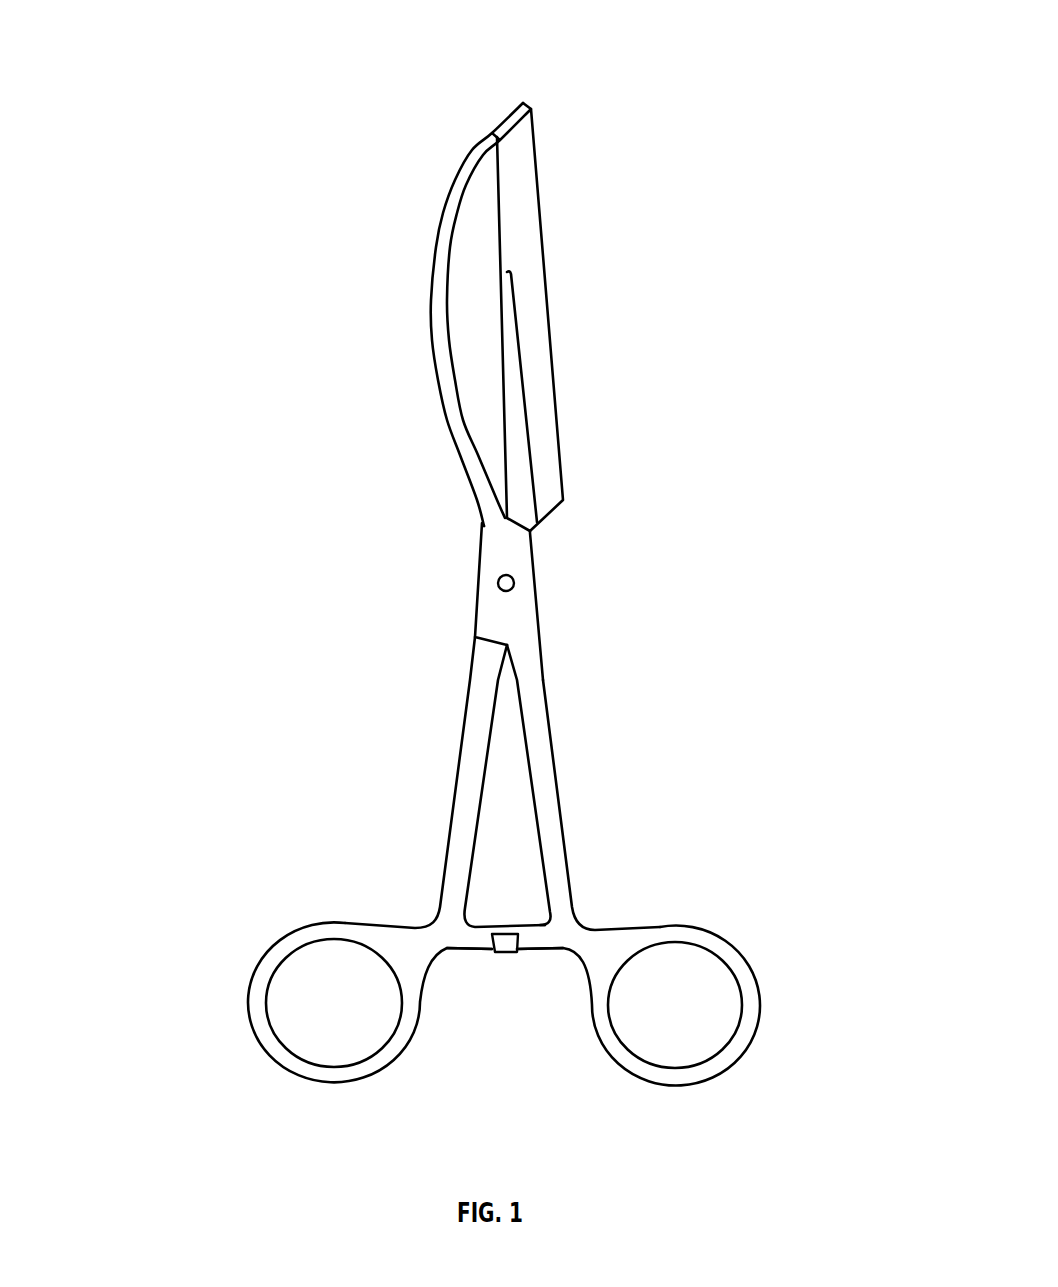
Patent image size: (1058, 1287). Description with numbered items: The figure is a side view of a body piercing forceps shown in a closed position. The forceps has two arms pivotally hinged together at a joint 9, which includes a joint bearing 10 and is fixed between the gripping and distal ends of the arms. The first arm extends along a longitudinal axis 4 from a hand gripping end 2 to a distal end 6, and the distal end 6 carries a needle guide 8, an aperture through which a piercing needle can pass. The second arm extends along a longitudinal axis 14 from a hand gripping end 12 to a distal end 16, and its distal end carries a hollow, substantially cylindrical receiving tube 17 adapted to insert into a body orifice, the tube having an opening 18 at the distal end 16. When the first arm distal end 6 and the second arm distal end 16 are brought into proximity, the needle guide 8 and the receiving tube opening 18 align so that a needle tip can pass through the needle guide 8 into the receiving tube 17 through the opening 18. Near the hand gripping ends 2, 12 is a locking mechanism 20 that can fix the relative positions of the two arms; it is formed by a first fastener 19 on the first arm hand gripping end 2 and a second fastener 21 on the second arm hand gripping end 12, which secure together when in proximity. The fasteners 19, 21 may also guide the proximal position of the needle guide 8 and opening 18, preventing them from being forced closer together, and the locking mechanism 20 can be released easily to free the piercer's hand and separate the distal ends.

The first arm hand gripping end 2 is at (733, 1096).
The first arm longitudinal axis 4 is at (586, 790).
The first arm distal end 6 is at (401, 340).
The needle guide 8 is at (508, 115).
The joint 9 is at (460, 570).
The joint bearing 10 is at (514, 583).
The second arm hand gripping end 12 is at (248, 1071).
The second arm longitudinal axis 14 is at (431, 757).
The second arm distal end 16 is at (576, 314).
The receiving tube 17 is at (530, 215).
The receiving tube opening 18 is at (533, 112).
The first fastener 19 is at (542, 942).
The locking mechanism 20 is at (490, 980).
The second fastener 21 is at (467, 938).